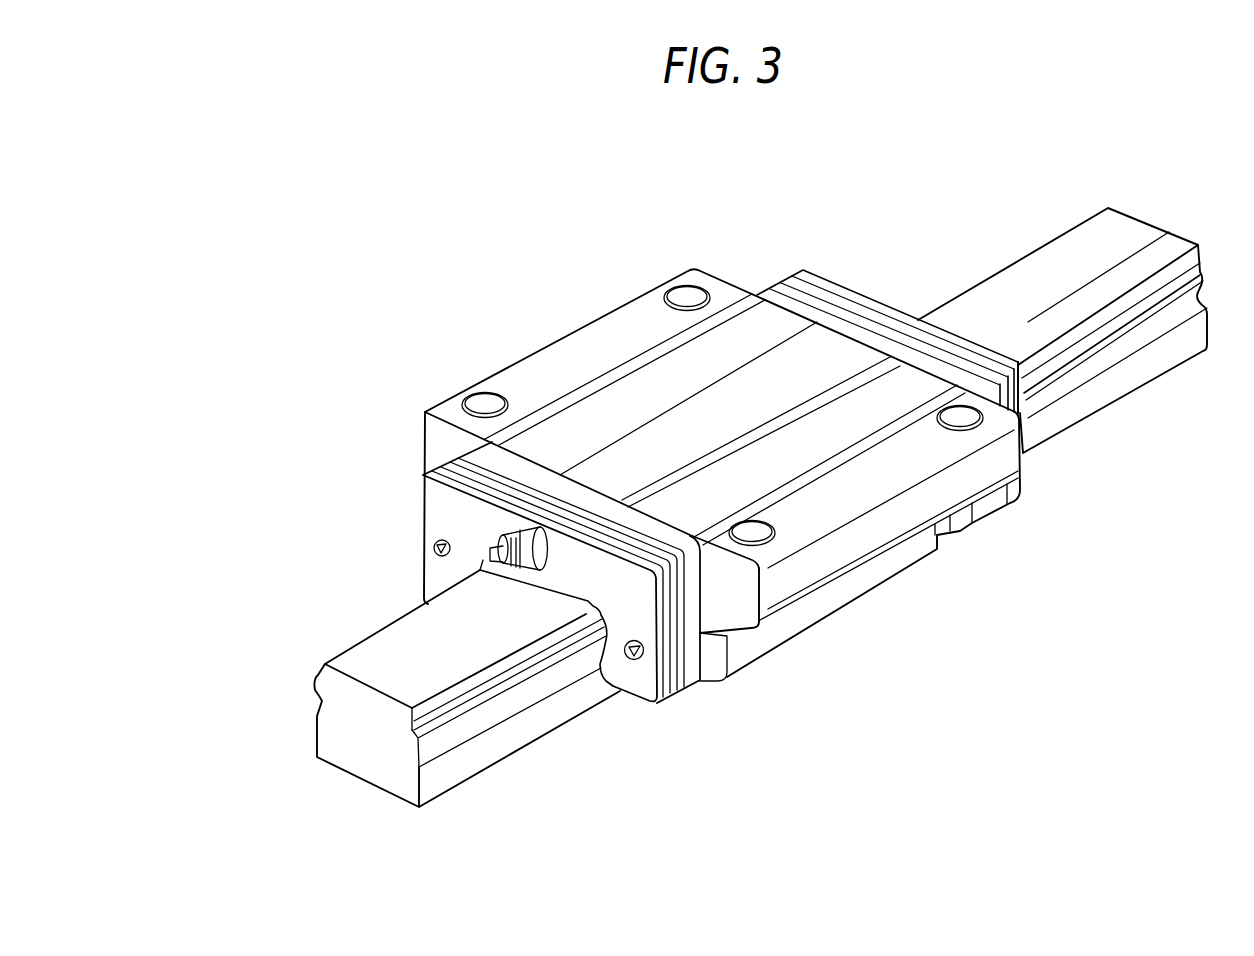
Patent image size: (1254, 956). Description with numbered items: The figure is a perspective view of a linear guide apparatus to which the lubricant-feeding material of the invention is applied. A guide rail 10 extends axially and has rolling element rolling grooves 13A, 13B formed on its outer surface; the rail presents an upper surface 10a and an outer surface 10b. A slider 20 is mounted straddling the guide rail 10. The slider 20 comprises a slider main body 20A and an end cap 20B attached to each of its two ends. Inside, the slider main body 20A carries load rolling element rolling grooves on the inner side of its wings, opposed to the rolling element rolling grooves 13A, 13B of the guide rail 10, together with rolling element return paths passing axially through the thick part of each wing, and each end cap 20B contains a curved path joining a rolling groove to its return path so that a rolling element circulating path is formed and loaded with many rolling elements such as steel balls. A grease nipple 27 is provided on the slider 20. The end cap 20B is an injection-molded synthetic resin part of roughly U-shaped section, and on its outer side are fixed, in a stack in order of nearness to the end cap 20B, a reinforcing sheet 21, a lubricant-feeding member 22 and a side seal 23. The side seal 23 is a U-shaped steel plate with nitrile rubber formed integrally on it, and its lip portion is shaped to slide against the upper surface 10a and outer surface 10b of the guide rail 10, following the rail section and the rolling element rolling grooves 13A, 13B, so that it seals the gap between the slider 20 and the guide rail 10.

The guide rail 10 is at (1120, 232).
The upper surface of the guide rail 10a is at (385, 648).
The outer surface of the guide rail 10b is at (317, 733).
The rolling element rolling groove 13A is at (320, 700).
The rolling element rolling groove 13B is at (320, 666).
The slider 20 is at (517, 352).
The slider main body 20A is at (612, 333).
The end cap 20B is at (482, 457).
The reinforcing sheet 21 is at (673, 628).
The lubricant-feeding member 22 is at (670, 688).
The side seal 23 is at (437, 497).
The grease nipple 27 is at (505, 547).